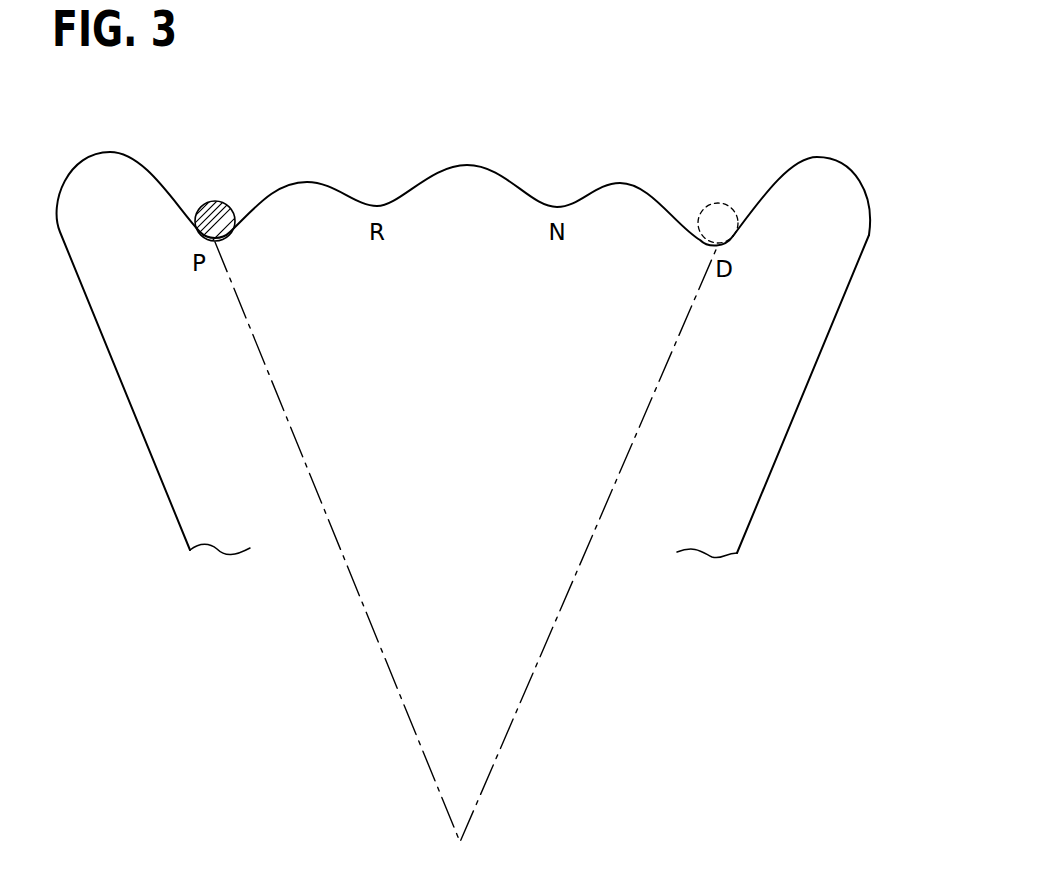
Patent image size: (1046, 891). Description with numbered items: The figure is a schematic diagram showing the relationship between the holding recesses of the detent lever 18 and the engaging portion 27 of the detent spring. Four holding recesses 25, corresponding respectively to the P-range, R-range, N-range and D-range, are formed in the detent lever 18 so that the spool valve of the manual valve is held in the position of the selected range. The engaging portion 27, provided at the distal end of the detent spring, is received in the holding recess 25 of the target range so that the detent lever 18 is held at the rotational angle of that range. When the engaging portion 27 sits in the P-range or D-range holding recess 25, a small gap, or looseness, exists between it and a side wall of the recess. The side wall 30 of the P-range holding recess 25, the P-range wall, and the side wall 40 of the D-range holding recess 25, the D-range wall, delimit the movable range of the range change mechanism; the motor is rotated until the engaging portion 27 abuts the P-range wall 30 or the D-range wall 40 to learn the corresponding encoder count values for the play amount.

The detent lever 18 is at (767, 488).
The holding recess 25 is at (203, 202).
The engaging portion 27 is at (222, 202).
The side wall of the P-range holding recess (P-range wall) 30 is at (183, 217).
The side wall of the D-range holding recess (D-range wall) 40 is at (750, 217).